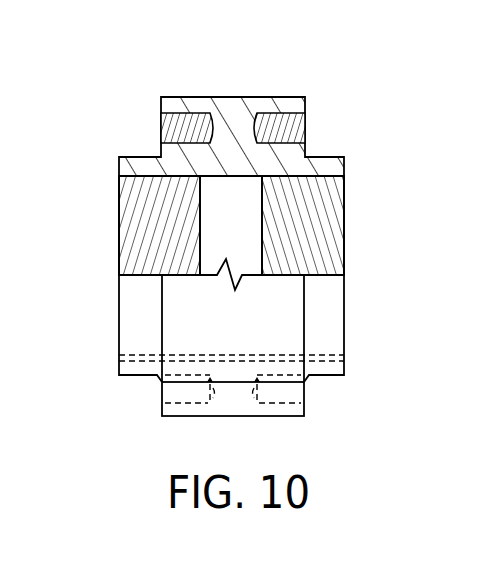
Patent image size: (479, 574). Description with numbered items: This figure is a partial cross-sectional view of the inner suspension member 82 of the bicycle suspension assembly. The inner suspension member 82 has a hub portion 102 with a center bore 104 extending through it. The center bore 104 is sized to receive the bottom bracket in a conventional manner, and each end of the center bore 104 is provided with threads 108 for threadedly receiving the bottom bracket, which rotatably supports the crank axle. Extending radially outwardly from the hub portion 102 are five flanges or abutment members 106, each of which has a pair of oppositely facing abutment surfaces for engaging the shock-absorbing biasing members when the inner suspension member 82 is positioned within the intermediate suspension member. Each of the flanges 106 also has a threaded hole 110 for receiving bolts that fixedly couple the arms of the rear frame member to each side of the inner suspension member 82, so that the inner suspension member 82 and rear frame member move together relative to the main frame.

The inner suspension member 82 is at (177, 86).
The hub portion 102 is at (325, 157).
The center bore 104 is at (344, 183).
The flanges or abutment members 106 is at (274, 98).
The threads 108 is at (137, 235).
The threaded hole 110 is at (177, 118).